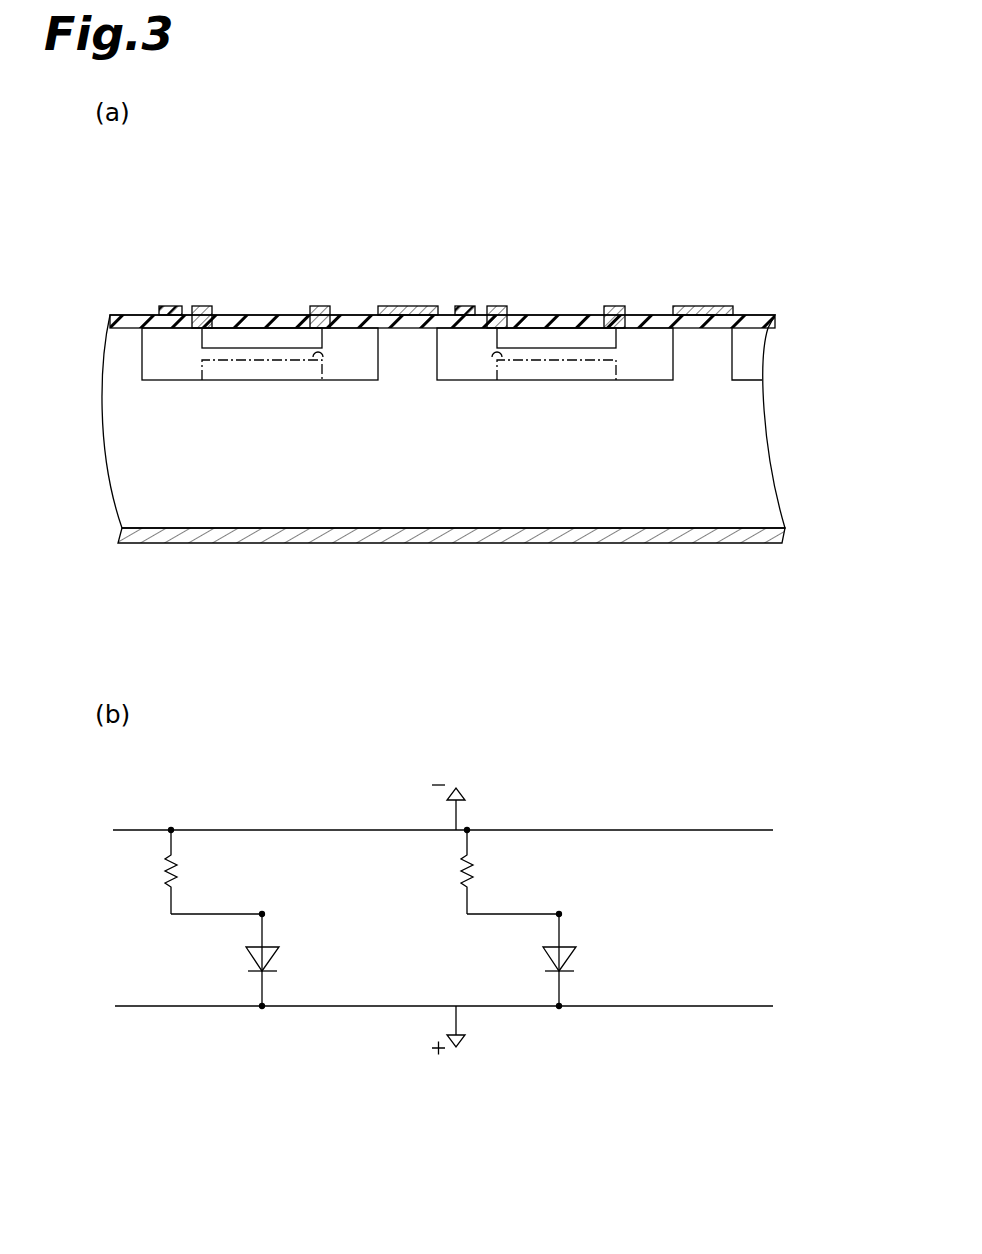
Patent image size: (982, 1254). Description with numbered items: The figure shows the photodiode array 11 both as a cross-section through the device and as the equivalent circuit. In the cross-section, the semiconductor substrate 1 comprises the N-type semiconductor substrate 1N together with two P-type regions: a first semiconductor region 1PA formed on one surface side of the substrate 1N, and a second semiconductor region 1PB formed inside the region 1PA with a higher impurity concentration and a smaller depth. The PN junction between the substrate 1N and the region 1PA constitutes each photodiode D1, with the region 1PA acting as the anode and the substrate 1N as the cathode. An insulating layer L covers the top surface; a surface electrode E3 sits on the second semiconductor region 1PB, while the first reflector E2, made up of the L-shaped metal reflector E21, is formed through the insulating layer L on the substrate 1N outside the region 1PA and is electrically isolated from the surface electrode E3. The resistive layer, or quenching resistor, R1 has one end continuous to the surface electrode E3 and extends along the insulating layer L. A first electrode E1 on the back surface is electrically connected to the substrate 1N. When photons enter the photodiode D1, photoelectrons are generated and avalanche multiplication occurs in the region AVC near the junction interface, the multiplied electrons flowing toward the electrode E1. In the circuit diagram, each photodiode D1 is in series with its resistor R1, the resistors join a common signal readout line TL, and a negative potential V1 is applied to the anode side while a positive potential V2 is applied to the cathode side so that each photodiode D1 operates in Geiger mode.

The photodiode array 11 is at (779, 203).
The semiconductor substrate 1 is at (484, 609).
The N-type semiconductor substrate 1N is at (554, 741).
The first semiconductor region 1PA is at (163, 383).
The second semiconductor region 1PB is at (238, 342).
The insulating layer L is at (772, 322).
The photodiode D1 is at (268, 284).
The resistive layer (quenching resistor) R1 is at (168, 306).
The surface electrode E3 is at (318, 306).
The reflector E21 is at (408, 306).
The first reflector E2 is at (552, 269).
The first electrode E1 is at (762, 540).
The neighboring region (avalanche multiplication region) AVC is at (320, 358).
The common signal readout line TL is at (758, 832).
The (−) electric potential V1 is at (462, 790).
The (+) electric potential V2 is at (462, 1040).